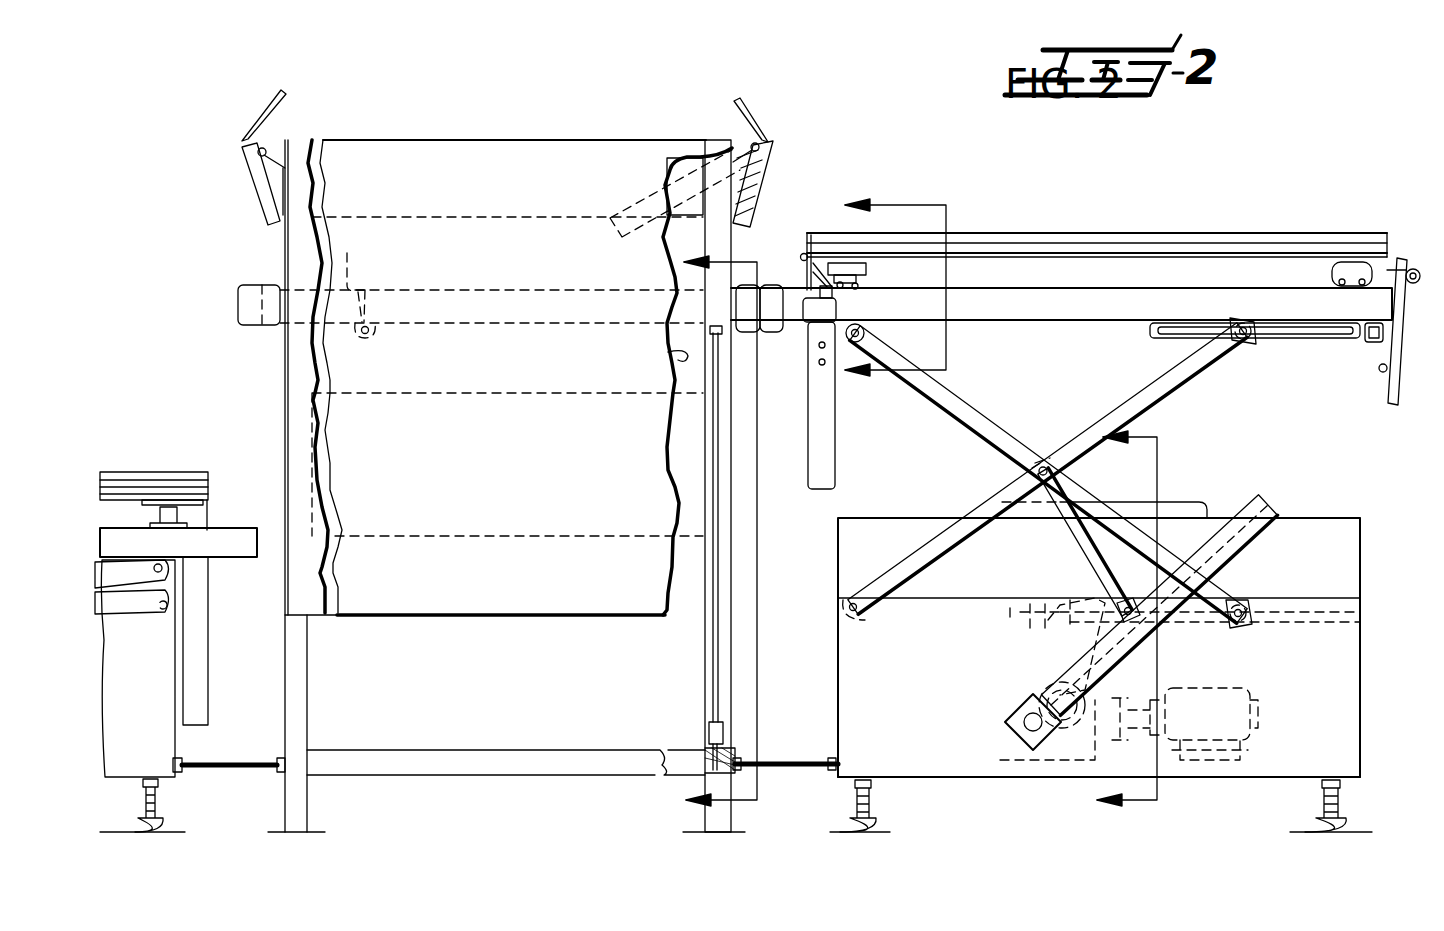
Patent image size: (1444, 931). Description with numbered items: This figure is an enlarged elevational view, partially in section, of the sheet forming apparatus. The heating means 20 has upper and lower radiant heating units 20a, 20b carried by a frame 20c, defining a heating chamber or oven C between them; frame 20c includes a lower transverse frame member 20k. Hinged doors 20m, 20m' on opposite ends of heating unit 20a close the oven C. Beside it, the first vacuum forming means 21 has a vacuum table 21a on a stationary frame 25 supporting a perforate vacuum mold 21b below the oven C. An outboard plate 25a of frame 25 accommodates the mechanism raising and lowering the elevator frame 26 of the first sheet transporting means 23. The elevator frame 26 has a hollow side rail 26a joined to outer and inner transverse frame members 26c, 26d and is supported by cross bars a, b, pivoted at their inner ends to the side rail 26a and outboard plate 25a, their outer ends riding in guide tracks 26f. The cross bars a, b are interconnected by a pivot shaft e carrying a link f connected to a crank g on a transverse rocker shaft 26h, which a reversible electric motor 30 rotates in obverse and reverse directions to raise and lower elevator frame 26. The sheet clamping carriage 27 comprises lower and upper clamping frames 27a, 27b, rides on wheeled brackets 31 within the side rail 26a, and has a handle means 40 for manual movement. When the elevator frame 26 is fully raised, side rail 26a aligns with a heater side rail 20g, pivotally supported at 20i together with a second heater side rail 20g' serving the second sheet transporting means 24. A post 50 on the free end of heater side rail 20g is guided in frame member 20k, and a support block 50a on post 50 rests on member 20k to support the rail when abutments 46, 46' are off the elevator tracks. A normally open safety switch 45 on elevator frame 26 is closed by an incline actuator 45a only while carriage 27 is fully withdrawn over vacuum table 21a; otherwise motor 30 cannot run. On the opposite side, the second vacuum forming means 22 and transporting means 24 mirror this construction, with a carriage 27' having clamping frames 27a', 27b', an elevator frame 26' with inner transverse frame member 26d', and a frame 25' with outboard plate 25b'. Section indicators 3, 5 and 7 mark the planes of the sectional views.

The heating means 20 is at (612, 122).
The upper radiant heating unit 20a is at (490, 140).
The lower radiant heating unit 20b is at (684, 462).
The frame of heating means 20c is at (283, 802).
The lower transverse frame member 20k is at (740, 748).
The heater side rail 20g is at (475, 377).
The second heater side rail 20g' is at (378, 287).
The pivotal connection 20i is at (360, 338).
The hinged door 20m is at (727, 167).
The hinged door 20m' is at (238, 157).
The heating chamber or oven C is at (668, 352).
The abutment 46 is at (733, 308).
The abutment 46' is at (232, 305).
The safety switch 45 is at (836, 307).
The incline actuator 45a is at (804, 257).
The wheeled bracket 31 is at (855, 278).
The side rail 26a is at (1061, 304).
The sheet clamping carriage 27 is at (1097, 232).
The lower clamping frame 27a is at (1097, 285).
The upper clamping frame 27b is at (1097, 223).
The first sheet supporting and transporting means 23 is at (1195, 228).
The handle means 40 is at (1387, 368).
The outer transverse frame member 26c is at (1372, 344).
The guide track 26f is at (1285, 340).
The elevator frame 26 is at (1045, 340).
The inner transverse frame member 26d is at (847, 405).
The cross bar a is at (992, 437).
The cross bar b is at (1133, 398).
The pivot shaft e is at (1045, 466).
The link f is at (1082, 548).
The crank g is at (1052, 679).
The rocker shaft 26h is at (1040, 700).
The reversible electric motor 30 is at (1195, 688).
The stationary frame 25 is at (1132, 647).
The outboard plate 25a is at (908, 675).
The first vacuum forming means 21 is at (1010, 782).
The vacuum table 21a is at (1330, 518).
The perforate vacuum mold 21b is at (1203, 500).
The post 50 is at (713, 636).
The support block 50a is at (705, 730).
The second sheet supporting and transporting means 24 is at (150, 462).
The sheet clamping carriage 27' is at (155, 475).
The lower clamping frame 27a' is at (241, 482).
The upper clamping frame 27b' is at (186, 461).
The elevator frame 26' is at (181, 526).
The inner transverse frame member 26d' is at (184, 641).
The stationary frame 25' is at (177, 668).
The outboard plate 25b' is at (134, 672).
The second vacuum forming means 22 is at (125, 782).
The section line 3- 3 is at (910, 290).
The section line 5- 5 is at (733, 531).
The section line 7- 7 is at (1140, 620).